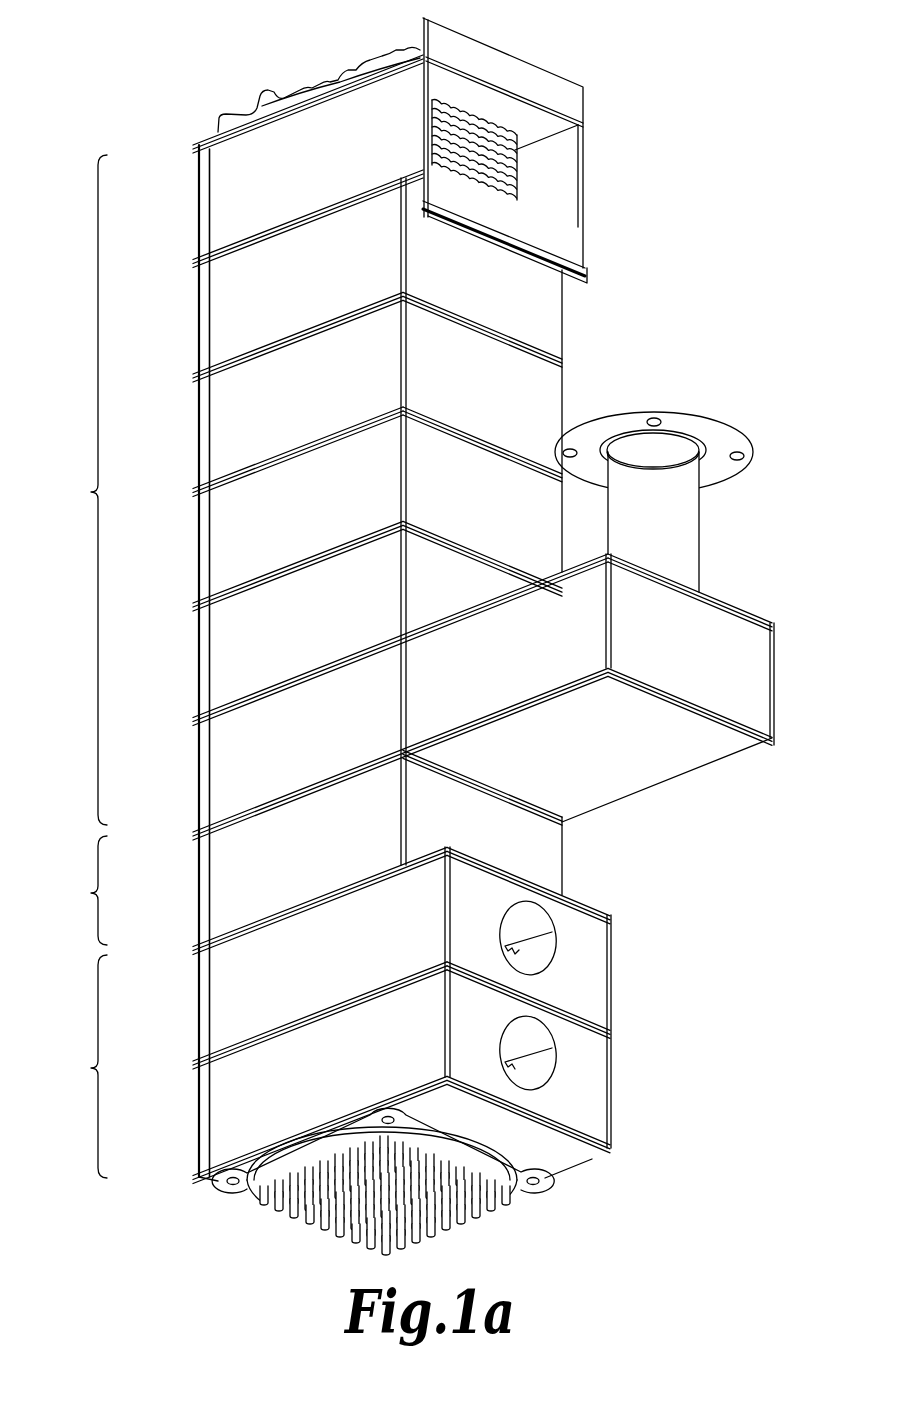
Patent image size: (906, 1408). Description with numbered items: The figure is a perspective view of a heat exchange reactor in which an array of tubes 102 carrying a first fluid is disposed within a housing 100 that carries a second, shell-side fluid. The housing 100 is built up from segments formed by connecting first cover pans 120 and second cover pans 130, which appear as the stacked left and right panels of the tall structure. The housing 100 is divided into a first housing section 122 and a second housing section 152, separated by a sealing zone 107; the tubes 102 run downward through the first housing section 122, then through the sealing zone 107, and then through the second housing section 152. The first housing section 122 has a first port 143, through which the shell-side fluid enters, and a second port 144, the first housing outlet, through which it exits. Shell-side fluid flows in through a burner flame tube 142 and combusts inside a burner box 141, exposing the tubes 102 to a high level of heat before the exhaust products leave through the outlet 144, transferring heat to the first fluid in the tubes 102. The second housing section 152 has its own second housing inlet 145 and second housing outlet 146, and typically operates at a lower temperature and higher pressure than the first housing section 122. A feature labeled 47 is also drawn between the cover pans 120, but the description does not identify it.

The housing 100 is at (197, 202).
The array of tubes 102 is at (506, 1215).
The sealing zone 107 is at (77, 890).
The first cover pans 120 is at (384, 1067).
The first housing section 122 is at (77, 490).
The second cover pans 130 is at (499, 1022).
The burner box 141 is at (627, 769).
The burner flame tube 142 is at (674, 526).
The first port 143 is at (706, 409).
The second port 144 is at (599, 193).
The second housing inlet 145 is at (542, 1068).
The second housing outlet 146 is at (533, 930).
The second housing section 152 is at (77, 1066).
The panel joint 47 is at (304, 971).